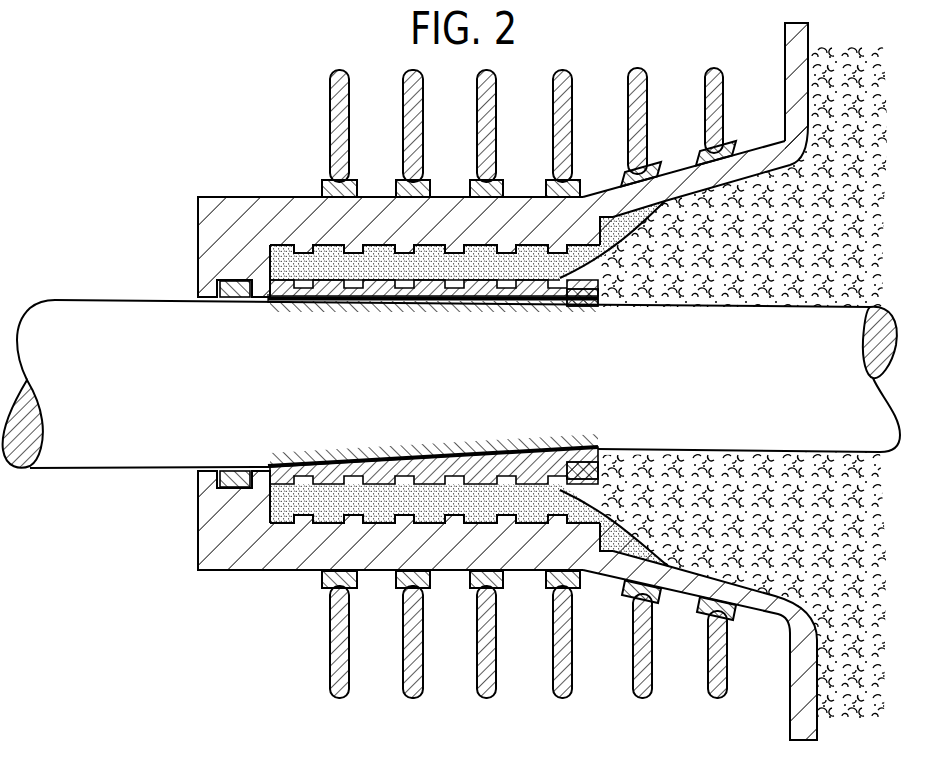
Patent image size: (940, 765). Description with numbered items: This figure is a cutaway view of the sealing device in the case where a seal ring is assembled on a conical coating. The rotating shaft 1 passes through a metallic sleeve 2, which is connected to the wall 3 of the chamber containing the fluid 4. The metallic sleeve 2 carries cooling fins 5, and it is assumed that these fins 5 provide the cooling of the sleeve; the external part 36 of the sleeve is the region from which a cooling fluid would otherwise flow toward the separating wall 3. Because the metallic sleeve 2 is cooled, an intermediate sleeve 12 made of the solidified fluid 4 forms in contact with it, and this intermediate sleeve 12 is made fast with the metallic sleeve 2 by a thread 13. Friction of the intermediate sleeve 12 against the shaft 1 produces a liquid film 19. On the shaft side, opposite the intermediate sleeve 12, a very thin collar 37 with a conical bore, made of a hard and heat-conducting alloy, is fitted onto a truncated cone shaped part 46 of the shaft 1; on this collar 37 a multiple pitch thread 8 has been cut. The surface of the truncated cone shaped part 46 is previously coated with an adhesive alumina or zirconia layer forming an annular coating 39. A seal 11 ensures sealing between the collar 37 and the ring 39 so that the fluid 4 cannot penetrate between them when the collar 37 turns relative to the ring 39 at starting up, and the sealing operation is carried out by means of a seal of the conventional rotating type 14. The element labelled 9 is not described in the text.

The rotating shaft 1 is at (125, 325).
The metallic sleeve 2 is at (768, 162).
The wall 3 is at (788, 72).
The fluid 4 is at (853, 173).
The cooling fins 5 is at (405, 113).
The multiple pitch thread 8 is at (375, 272).
The sleeve end 9 is at (270, 300).
The seal 11 is at (567, 310).
The intermediate sleeve 12 is at (613, 215).
The thread 13 is at (518, 246).
The seal of the conventional rotating type 14 is at (237, 280).
The liquid film 19 is at (447, 245).
The external part of the sleeve 36 is at (198, 243).
The collar 37 is at (513, 288).
The annular coating 39 is at (305, 310).
The truncated cone shaped part 46 is at (437, 308).